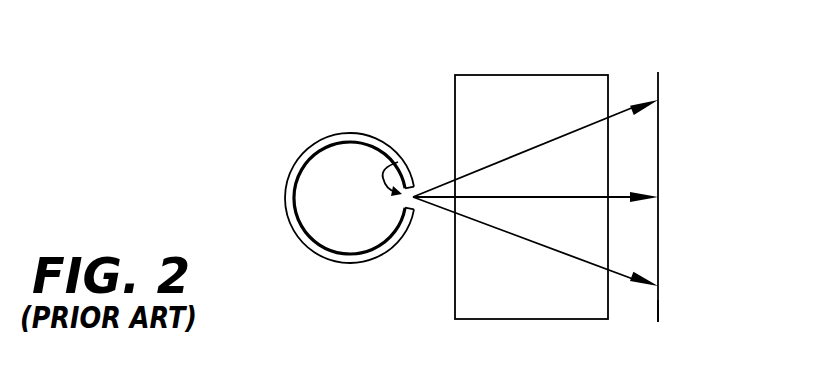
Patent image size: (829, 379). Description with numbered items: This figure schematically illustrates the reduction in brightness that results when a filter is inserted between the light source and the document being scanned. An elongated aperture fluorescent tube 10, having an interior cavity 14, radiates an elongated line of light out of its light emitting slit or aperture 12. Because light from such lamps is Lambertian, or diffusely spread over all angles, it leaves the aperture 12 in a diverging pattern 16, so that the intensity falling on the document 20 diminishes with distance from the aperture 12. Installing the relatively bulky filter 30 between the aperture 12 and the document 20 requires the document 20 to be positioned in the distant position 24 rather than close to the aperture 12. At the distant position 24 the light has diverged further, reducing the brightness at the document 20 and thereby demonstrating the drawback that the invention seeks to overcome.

The fluorescent tube 10 is at (320, 134).
The aperture 12 is at (402, 170).
The cavity 14 is at (339, 243).
The pattern 16 is at (531, 276).
The document 20 is at (660, 92).
The distant position 24 is at (664, 322).
The filter 30 is at (482, 75).